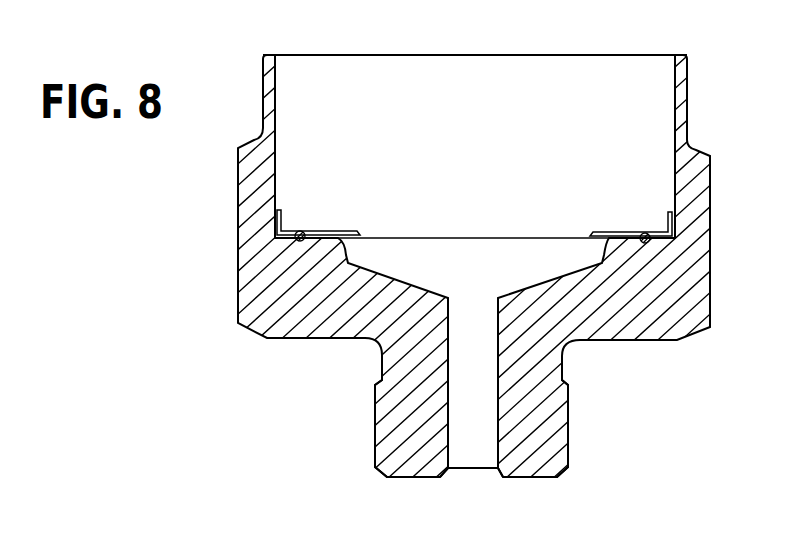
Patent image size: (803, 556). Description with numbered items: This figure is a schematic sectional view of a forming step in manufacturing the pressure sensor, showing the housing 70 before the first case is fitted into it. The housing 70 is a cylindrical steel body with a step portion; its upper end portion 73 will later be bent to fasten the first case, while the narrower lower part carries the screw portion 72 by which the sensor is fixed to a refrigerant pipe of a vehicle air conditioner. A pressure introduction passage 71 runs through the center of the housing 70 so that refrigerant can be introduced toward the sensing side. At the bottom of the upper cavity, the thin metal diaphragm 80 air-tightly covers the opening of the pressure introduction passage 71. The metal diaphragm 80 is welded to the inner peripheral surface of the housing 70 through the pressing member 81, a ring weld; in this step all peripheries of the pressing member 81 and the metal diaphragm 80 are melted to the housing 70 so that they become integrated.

The housing 70 is at (703, 241).
The pressure introduction passage 71 is at (495, 422).
The screw portion 72 is at (568, 413).
The end portion 73 is at (684, 58).
The metal diaphragm 80 is at (503, 238).
The pressing member 81 is at (330, 233).